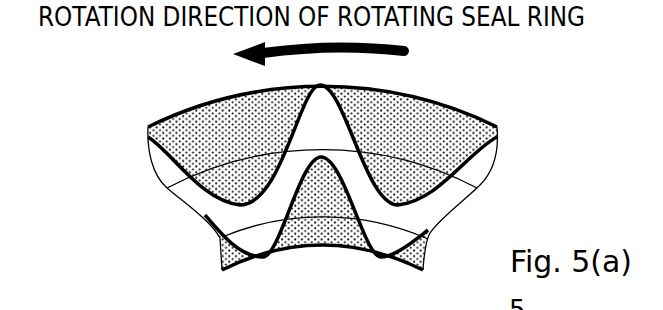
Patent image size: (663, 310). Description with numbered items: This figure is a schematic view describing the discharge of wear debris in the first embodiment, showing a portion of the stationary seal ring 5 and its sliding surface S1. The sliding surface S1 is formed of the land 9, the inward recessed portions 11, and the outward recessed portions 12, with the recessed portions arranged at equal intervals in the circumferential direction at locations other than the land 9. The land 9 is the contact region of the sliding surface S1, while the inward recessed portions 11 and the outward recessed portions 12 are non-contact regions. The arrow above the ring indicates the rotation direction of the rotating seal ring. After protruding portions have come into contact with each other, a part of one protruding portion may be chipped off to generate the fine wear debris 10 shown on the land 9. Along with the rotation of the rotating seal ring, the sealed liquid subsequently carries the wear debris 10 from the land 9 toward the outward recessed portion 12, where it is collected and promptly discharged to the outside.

The stationary seal ring 5 is at (472, 76).
The sliding surface S1 is at (490, 108).
The land 9 is at (335, 126).
The wear debris 10 is at (287, 188).
The inward recessed portions 11 is at (336, 257).
The outward recessed portions 12 is at (207, 93).